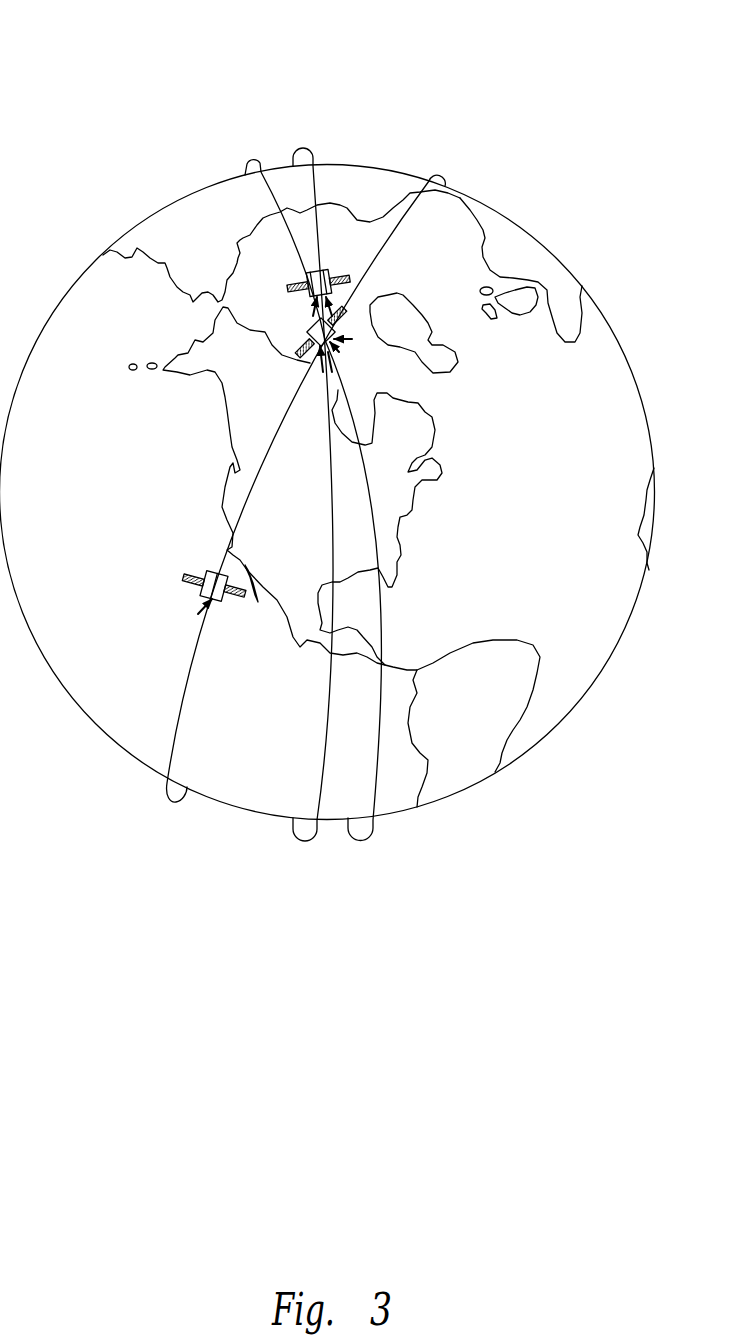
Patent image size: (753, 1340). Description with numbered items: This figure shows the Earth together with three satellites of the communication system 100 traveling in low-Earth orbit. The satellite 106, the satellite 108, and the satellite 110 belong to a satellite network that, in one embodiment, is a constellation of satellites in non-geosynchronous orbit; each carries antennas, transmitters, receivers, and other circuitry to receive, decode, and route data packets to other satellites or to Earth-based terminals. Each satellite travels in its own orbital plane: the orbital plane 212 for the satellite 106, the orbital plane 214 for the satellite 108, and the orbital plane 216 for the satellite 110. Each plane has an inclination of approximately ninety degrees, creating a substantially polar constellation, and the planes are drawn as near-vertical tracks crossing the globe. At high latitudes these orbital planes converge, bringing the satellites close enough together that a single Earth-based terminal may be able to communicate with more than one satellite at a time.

The communication system 100 is at (632, 19).
The satellite 106 is at (317, 270).
The satellite 108 is at (345, 327).
The satellite 110 is at (200, 592).
The orbital plane 212 is at (382, 610).
The orbital plane 214 is at (327, 682).
The orbital plane 216 is at (180, 703).